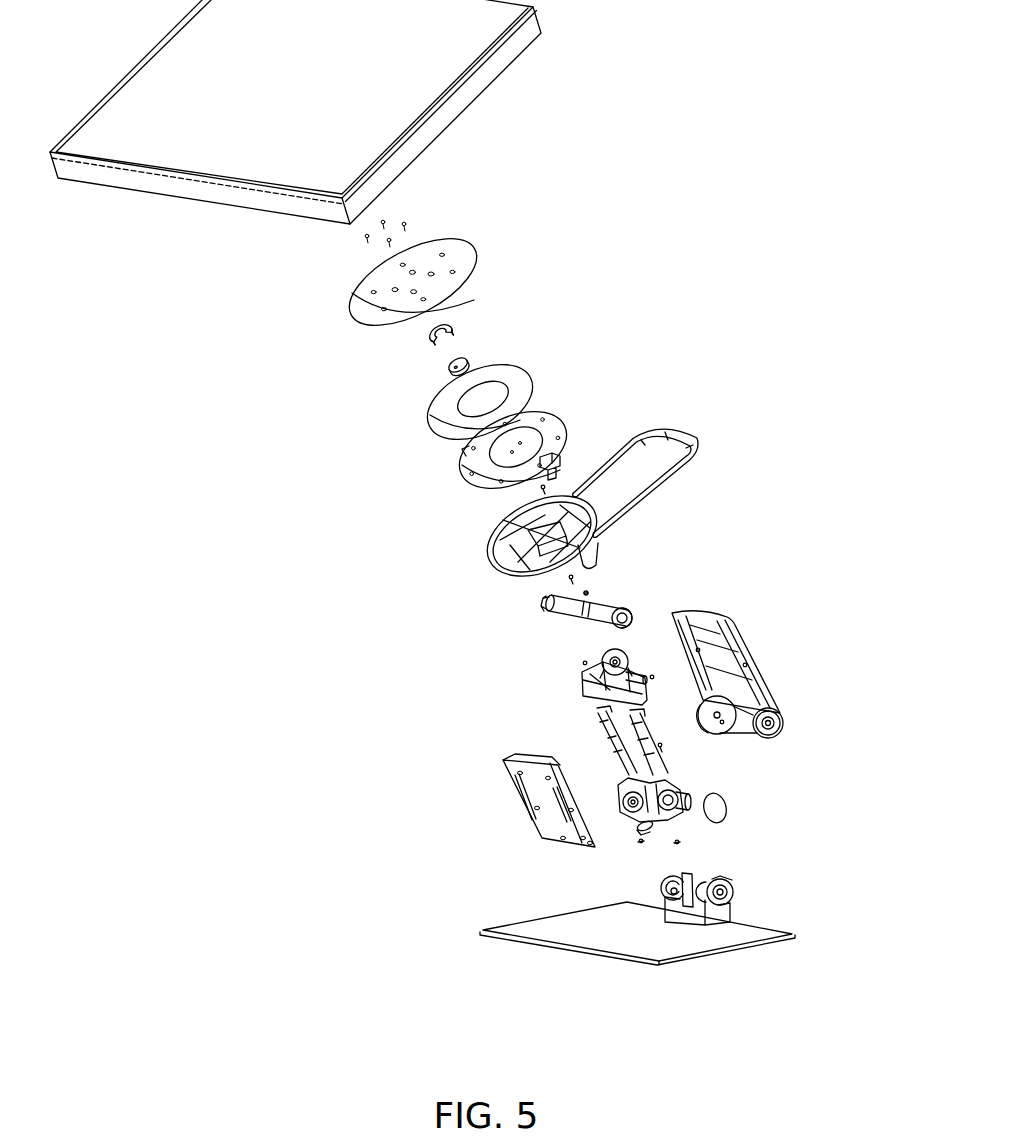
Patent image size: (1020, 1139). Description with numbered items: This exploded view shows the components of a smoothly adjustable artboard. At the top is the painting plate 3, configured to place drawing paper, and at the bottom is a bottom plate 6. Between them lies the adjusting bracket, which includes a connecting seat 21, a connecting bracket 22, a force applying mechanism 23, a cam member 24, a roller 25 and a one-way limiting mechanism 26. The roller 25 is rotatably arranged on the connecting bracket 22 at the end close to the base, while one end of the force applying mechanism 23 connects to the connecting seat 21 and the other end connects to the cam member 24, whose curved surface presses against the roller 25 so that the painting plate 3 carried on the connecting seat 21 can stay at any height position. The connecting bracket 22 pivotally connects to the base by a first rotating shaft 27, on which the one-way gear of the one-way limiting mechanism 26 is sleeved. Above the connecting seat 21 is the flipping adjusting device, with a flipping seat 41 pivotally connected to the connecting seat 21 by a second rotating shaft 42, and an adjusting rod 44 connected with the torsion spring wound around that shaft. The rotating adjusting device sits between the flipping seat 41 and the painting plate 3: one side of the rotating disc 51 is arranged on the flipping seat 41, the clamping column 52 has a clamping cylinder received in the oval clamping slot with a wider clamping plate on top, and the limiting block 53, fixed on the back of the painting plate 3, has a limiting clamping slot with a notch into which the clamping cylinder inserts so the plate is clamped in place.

The painting plate 3 is at (377, 75).
The bottom plate 6 is at (697, 935).
The connecting seat 21 is at (580, 687).
The connecting bracket 22 is at (727, 660).
The force applying mechanism 23 is at (630, 762).
The cam member 24 is at (541, 837).
The roller 25 is at (627, 807).
The one-way limiting mechanism 26 is at (637, 827).
The first rotating shaft 27 is at (726, 812).
The flipping seat 41 is at (488, 558).
The second rotating shaft 42 is at (553, 613).
The adjusting rod 44 is at (673, 440).
The rotating disc 51 is at (383, 298).
The clamping column 52 is at (473, 360).
The limiting block 53 is at (463, 327).